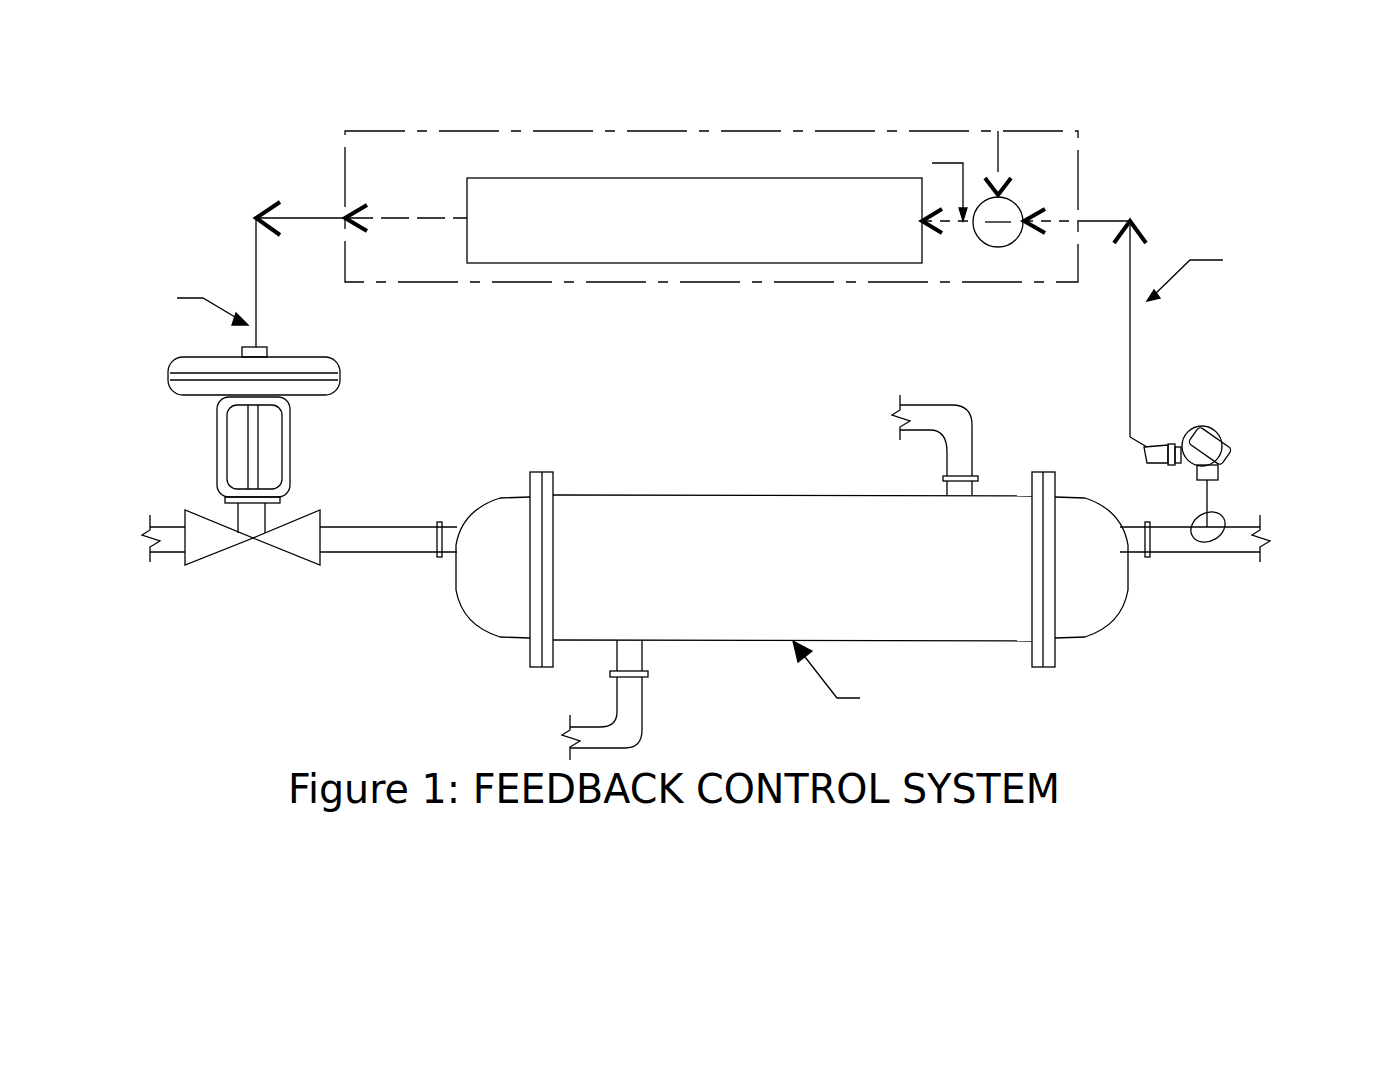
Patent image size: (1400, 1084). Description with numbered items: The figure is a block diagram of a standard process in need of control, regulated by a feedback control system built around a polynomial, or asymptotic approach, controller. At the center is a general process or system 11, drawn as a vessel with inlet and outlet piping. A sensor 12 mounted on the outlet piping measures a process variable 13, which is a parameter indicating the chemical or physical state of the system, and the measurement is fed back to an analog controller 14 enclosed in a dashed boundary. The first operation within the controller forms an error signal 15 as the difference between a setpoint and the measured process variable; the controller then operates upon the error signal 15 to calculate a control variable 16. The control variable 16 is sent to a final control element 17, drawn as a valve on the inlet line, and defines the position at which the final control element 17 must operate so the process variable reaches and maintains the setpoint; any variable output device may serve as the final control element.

The process or system 11 is at (678, 490).
The sensor 12 is at (1232, 475).
The process variable 13 is at (1135, 374).
The analog controller 14 is at (1086, 189).
The error signal 15 is at (962, 228).
The control variable 16 is at (250, 233).
The final control element 17 is at (277, 342).